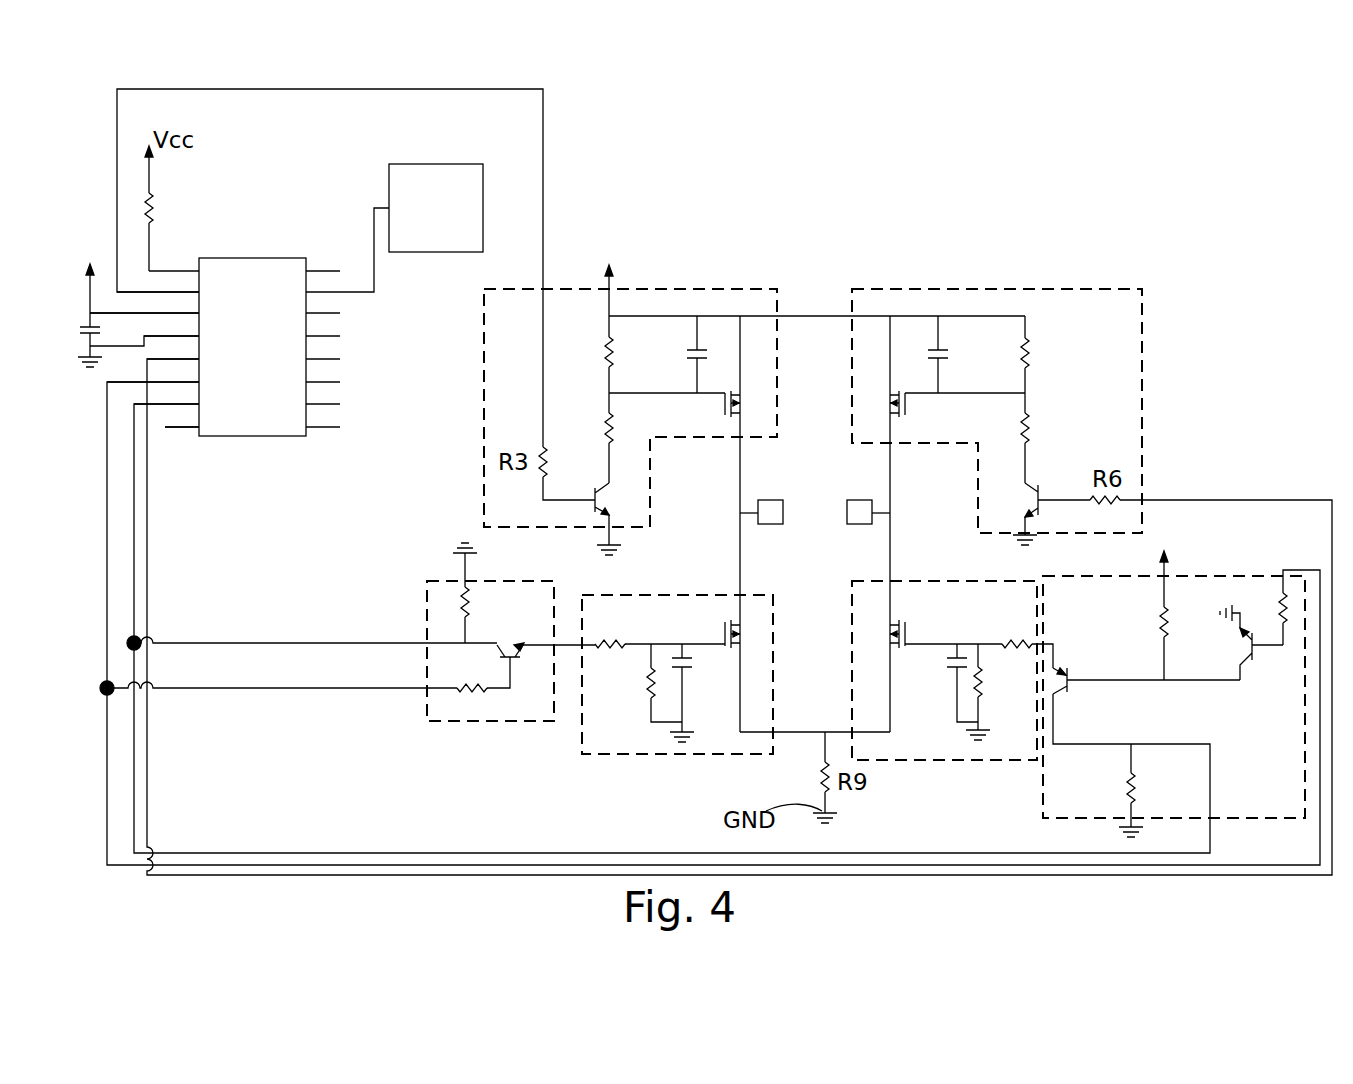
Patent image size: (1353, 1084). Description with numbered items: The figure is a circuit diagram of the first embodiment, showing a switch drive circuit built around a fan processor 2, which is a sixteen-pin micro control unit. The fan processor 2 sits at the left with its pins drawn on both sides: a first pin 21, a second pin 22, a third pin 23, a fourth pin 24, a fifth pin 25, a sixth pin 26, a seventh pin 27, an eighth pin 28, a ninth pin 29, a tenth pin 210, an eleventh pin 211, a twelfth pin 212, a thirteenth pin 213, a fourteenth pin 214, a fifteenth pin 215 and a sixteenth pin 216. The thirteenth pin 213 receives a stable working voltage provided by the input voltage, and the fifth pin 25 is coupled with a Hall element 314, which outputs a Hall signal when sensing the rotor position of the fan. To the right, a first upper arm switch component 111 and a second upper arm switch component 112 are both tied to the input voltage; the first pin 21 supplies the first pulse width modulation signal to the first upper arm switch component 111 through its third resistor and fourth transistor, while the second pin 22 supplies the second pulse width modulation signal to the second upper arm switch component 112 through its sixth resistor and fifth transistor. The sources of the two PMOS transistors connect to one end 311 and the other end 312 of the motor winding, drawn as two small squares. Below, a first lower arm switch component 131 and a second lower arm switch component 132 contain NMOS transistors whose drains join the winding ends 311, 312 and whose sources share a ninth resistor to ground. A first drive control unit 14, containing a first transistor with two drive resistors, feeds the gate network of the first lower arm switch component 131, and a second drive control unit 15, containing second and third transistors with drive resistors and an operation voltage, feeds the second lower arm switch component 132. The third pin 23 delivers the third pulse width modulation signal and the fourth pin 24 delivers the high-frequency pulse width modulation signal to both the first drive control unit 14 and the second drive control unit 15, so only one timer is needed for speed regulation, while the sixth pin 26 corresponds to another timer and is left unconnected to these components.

The fan processor 2 is at (252, 258).
The first pin 21 is at (158, 282).
The second pin 22 is at (173, 349).
The third pin 23 is at (153, 372).
The fourth pin 24 is at (166, 394).
The fifth pin 25 is at (347, 250).
The sixth pin 26 is at (182, 417).
The seventh pin 27 is at (323, 417).
The eighth pin 28 is at (323, 303).
The ninth pin 29 is at (323, 372).
The tenth pin 210 is at (325, 349).
The eleventh pin 211 is at (325, 261).
The twelfth pin 212 is at (325, 326).
The thirteenth pin 213 is at (174, 261).
The fourteenth pin 214 is at (144, 303).
The fifteenth pin 215 is at (171, 326).
The sixteenth pin 216 is at (325, 394).
The first drive control unit 14 is at (427, 582).
The second drive control unit 15 is at (1230, 576).
The first upper arm switch component 111 is at (700, 288).
The second upper arm switch component 112 is at (1017, 288).
The first lower arm switch component 131 is at (590, 755).
The second lower arm switch component 132 is at (978, 762).
The one end of the motor winding 311 is at (768, 500).
The other end of the motor winding 312 is at (877, 500).
The Hall element 314 is at (424, 164).